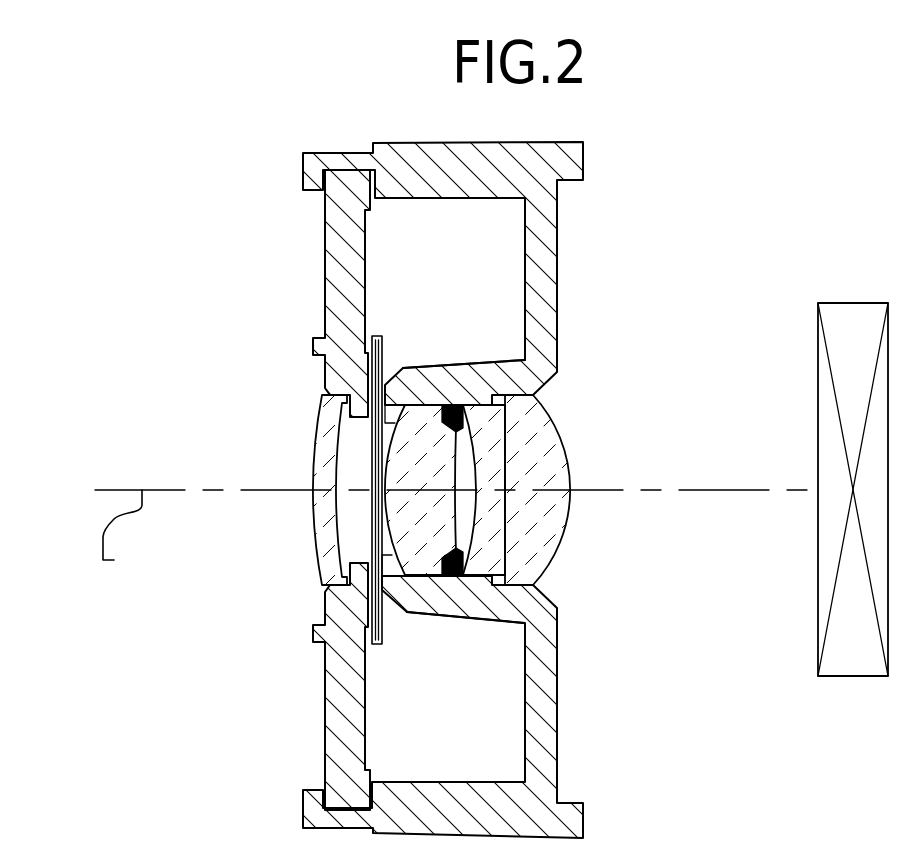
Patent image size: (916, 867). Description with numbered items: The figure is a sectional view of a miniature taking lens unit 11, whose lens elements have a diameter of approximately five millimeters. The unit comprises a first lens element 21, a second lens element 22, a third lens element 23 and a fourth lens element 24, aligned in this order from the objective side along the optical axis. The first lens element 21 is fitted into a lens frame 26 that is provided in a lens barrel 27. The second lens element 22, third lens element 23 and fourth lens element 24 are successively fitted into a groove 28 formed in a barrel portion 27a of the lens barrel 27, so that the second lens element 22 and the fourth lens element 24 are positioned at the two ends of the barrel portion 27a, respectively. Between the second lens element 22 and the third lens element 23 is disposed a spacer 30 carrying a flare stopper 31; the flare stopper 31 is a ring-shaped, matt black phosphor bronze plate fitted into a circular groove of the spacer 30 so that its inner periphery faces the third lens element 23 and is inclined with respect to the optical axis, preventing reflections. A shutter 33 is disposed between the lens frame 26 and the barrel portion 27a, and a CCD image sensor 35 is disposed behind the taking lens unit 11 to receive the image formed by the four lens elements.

The taking lens unit 11 is at (268, 490).
The first lens element 21 is at (312, 440).
The second lens element 22 is at (413, 405).
The third lens element 23 is at (482, 408).
The fourth lens element 24 is at (548, 412).
The lens frame 26 is at (322, 702).
The lens barrel 27 is at (553, 683).
The barrel portion 27a is at (418, 613).
The groove 28 is at (503, 560).
The spacer 30 is at (452, 410).
The flare stopper 31 is at (463, 425).
The shutter 33 is at (317, 410).
The CCD image sensor 35 is at (852, 303).